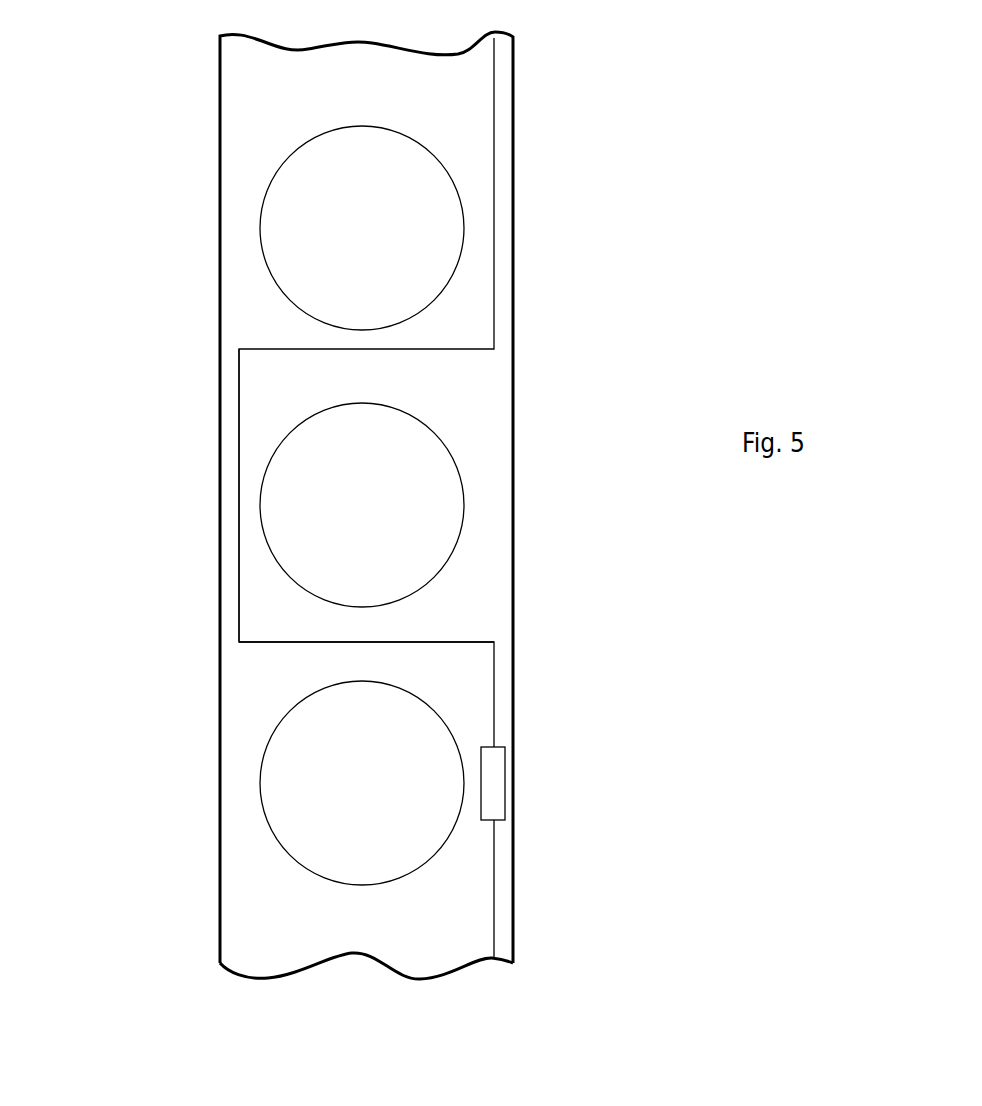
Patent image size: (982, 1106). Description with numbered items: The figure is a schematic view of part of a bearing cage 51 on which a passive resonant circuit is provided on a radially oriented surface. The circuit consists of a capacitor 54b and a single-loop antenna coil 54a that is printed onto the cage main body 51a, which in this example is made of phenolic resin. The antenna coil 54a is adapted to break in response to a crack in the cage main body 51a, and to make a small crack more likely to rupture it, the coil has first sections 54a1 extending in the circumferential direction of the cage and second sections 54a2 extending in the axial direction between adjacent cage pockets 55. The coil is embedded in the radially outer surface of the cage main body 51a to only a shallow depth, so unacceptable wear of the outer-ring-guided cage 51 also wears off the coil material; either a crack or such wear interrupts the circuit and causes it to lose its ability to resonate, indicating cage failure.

The cage 51 is at (593, 132).
The cage main body 51a is at (270, 85).
The antenna coil 54a is at (493, 892).
The first sections 54a1 is at (239, 415).
The second sections 54a2 is at (441, 640).
The capacitor 54b is at (491, 793).
The cage pockets 55 is at (318, 198).